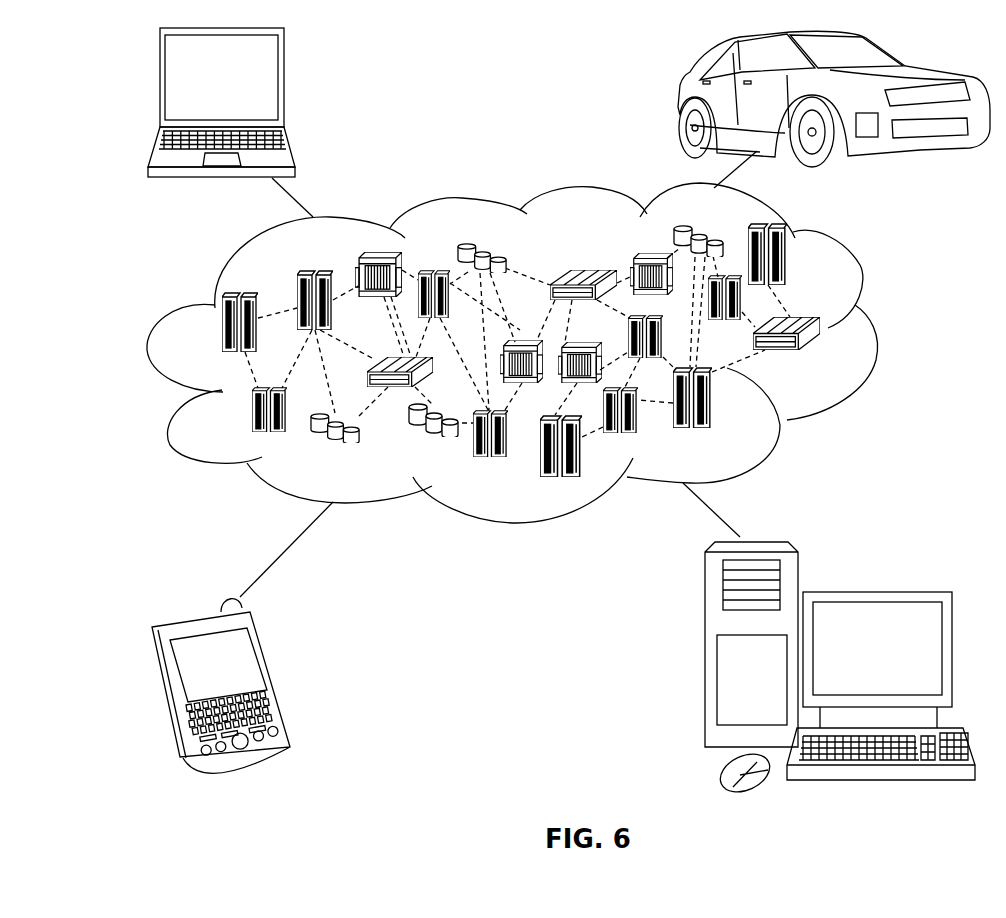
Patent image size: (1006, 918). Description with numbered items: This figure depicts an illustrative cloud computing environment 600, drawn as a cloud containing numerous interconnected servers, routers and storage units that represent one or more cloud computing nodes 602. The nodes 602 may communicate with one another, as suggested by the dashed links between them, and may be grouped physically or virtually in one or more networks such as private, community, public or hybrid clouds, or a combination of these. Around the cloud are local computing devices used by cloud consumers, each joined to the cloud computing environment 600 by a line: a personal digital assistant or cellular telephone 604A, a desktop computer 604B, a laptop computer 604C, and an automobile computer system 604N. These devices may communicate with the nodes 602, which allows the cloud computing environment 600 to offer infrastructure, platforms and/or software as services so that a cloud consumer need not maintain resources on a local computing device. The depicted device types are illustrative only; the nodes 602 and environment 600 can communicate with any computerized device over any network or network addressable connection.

The cloud computing environment 600 is at (875, 332).
The cloud computing nodes 602 is at (828, 359).
The personal digital assistant or cellular telephone 604A is at (278, 676).
The desktop computer 604B is at (875, 592).
The laptop computer 604C is at (284, 83).
The automobile computer system 604N is at (681, 100).